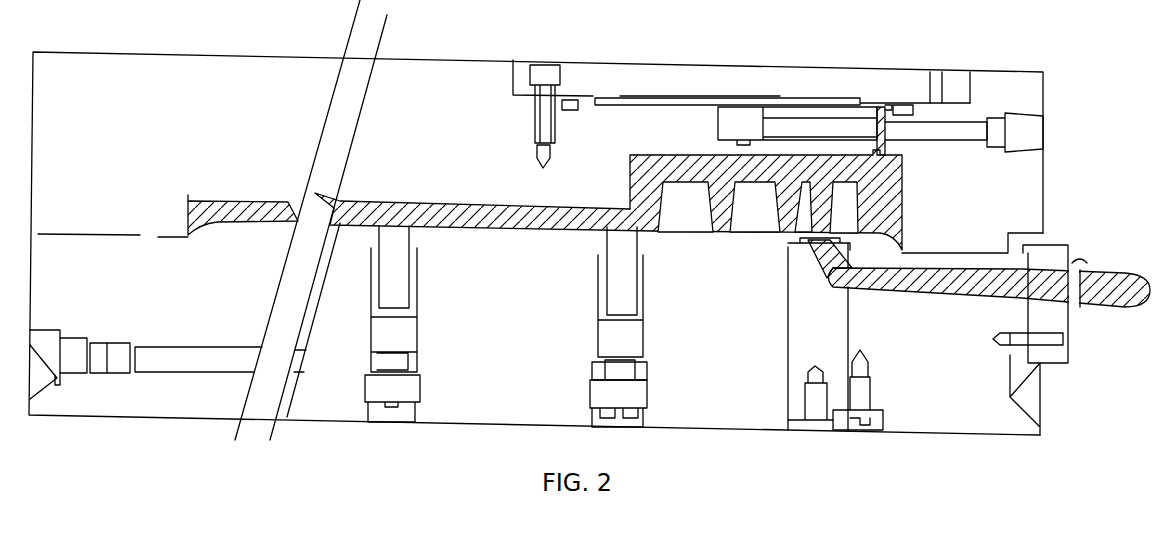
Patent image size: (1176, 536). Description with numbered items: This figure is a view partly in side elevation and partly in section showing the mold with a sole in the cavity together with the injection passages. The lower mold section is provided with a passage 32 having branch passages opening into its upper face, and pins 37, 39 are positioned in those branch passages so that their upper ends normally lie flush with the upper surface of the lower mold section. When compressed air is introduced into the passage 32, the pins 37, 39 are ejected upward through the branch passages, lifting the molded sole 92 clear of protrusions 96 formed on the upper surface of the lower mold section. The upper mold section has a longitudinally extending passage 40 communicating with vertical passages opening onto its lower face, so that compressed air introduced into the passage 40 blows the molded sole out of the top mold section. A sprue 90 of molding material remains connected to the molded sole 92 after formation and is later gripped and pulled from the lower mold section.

The passage 32 is at (205, 365).
The pin 37 is at (393, 270).
The pin 39 is at (617, 247).
The longitudinally extending passage 40 is at (965, 128).
The sprue 90 is at (843, 287).
The molded sole 92 is at (672, 158).
The protrusions 96 is at (803, 213).